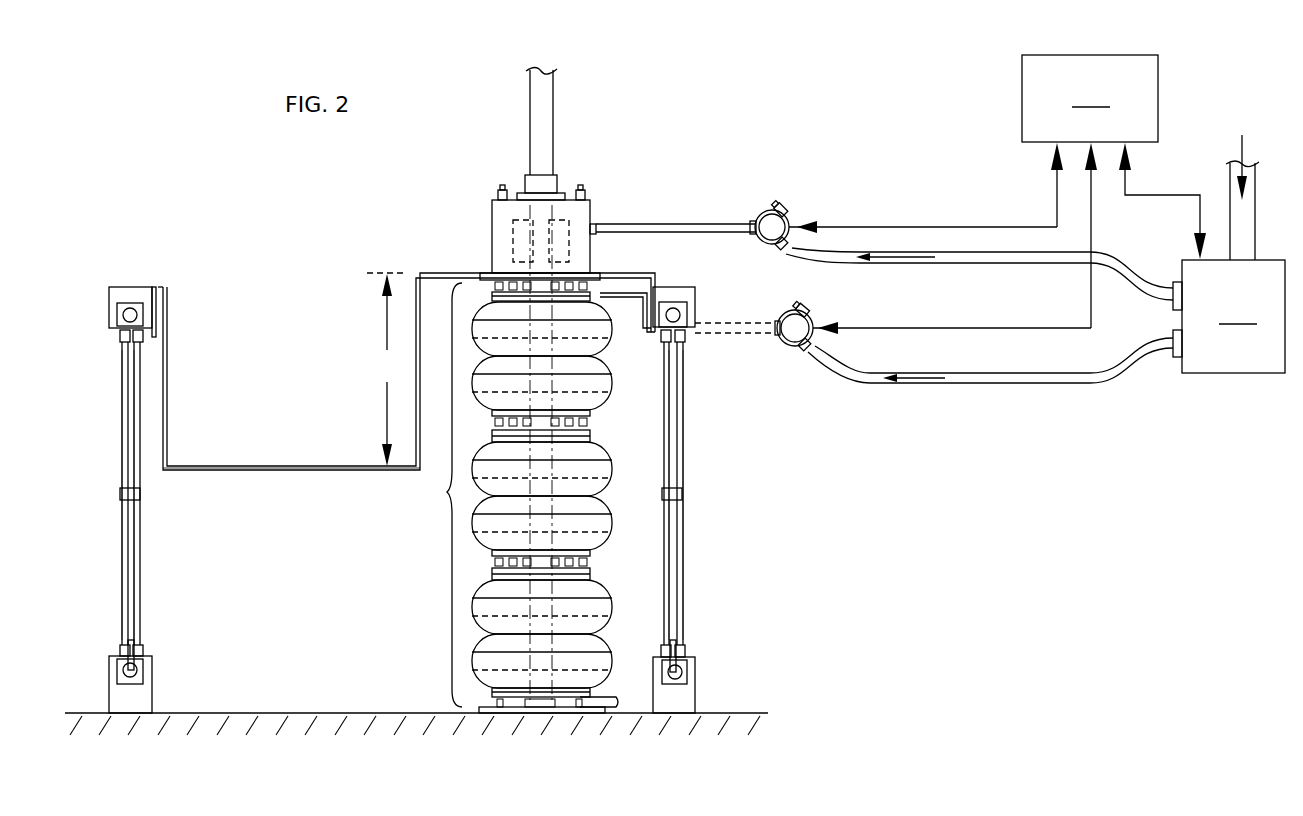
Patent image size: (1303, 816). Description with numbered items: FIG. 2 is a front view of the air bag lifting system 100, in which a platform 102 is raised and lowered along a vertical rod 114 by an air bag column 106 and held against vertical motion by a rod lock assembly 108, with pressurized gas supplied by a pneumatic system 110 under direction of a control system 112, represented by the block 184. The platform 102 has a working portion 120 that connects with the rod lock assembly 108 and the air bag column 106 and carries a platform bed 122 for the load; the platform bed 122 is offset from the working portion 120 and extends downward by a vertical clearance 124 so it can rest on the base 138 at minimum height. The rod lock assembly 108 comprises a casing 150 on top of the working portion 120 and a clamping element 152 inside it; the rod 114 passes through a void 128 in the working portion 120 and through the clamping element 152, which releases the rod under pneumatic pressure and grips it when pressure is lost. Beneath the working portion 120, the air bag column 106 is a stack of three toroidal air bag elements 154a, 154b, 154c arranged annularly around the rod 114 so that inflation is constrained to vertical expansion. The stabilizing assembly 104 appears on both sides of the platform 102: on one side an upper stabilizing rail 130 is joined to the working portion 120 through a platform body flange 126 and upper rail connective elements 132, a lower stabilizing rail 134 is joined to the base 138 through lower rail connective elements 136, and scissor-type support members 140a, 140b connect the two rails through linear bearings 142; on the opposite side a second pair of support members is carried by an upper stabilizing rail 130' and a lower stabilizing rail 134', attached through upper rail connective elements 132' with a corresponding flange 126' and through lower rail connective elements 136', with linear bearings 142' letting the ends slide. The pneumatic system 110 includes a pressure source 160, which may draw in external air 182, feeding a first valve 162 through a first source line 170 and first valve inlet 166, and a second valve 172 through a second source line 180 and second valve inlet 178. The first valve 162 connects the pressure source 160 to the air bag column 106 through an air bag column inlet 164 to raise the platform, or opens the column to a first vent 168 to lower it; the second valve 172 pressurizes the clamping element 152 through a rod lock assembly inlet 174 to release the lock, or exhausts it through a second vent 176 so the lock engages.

The air bag lifting system 100 is at (268, 195).
The platform 102 is at (270, 490).
The stabilizing assembly 104 is at (88, 422).
The air bag column 106 is at (447, 492).
The rod lock assembly 108 is at (460, 198).
The pneumatic system 110 is at (1220, 412).
The control system 112 is at (998, 76).
The vertical rod 114 is at (530, 96).
The working portion 120 is at (428, 273).
The platform bed 122 is at (254, 467).
The vertical clearance 124 is at (390, 369).
The platform body flange 126 is at (673, 257).
The frame bracket 126' is at (199, 302).
The void 128 is at (540, 280).
The upper stabilizing rail 130 is at (720, 306).
The upper stabilizing rail 130' is at (163, 286).
The upper rail connective elements 132 is at (707, 282).
The upper rail connective elements 132' is at (99, 297).
The lower stabilizing rail 134 is at (717, 656).
The lower stabilizing rail 134' is at (180, 655).
The lower rail connective elements 136 is at (717, 685).
The lower rail connective elements 136' is at (173, 684).
The base 138 is at (366, 700).
The support member 140a is at (122, 360).
The support member 140b is at (140, 385).
The linear bearings 142 is at (721, 474).
The linear bearings 142' is at (92, 484).
The casing 150 is at (525, 190).
The clamping element 152 is at (513, 246).
The air bag element 154a is at (605, 607).
The air bag element 154b is at (605, 523).
The air bag element 154c is at (605, 400).
The pressure source 160 is at (1229, 316).
The first valve 162 is at (784, 345).
The air bag column inlet 164 is at (772, 328).
The first valve inlet 166 is at (812, 354).
The first vent 168 is at (820, 307).
The first source line 170 is at (912, 384).
The second valve 172 is at (772, 210).
The rod lock assembly inlet 174 is at (596, 228).
The second vent 176 is at (796, 207).
The second valve inlet 178 is at (812, 240).
The second source line 180 is at (920, 264).
The external air 182 is at (1228, 186).
The controller 184 is at (1114, 157).